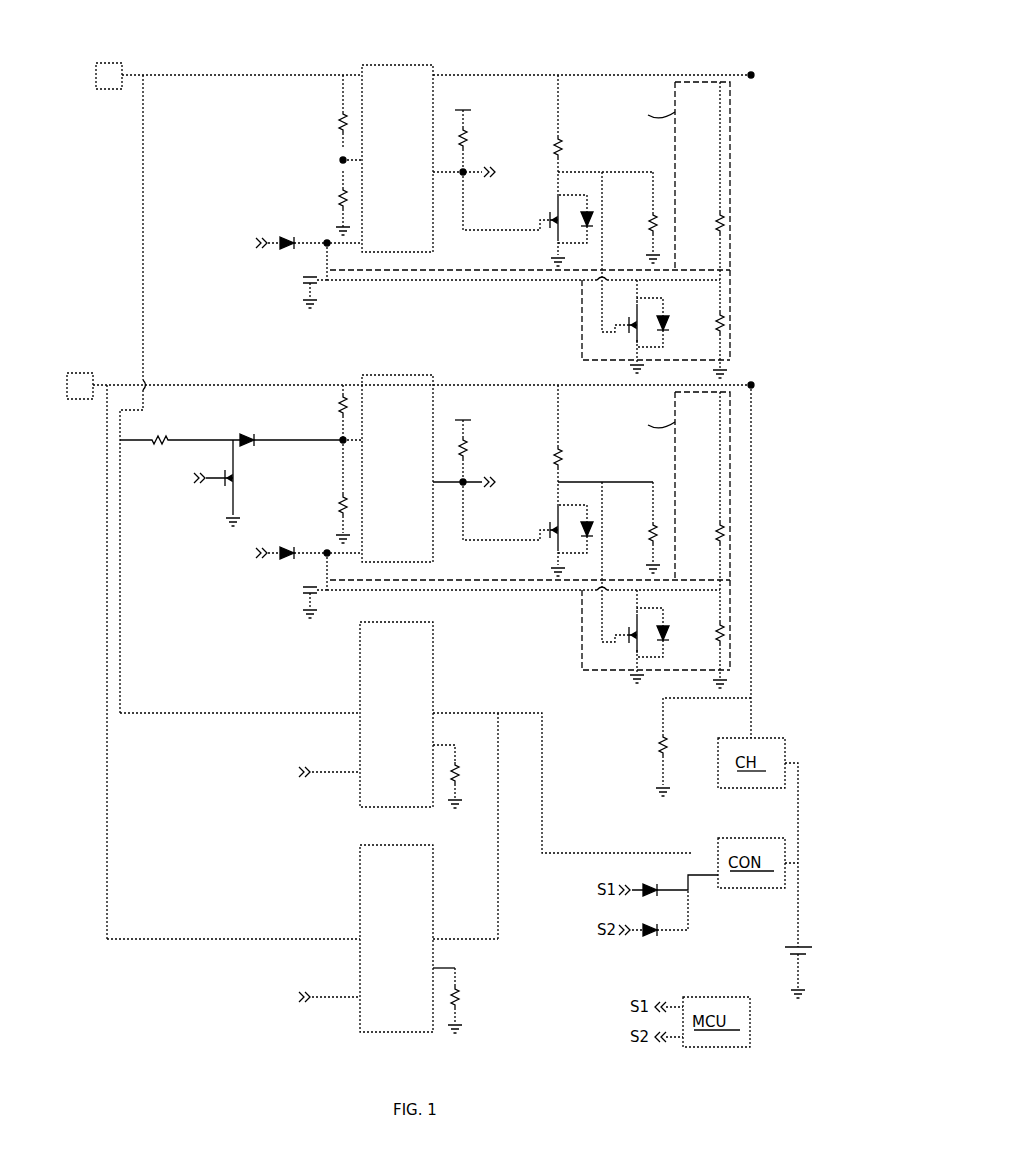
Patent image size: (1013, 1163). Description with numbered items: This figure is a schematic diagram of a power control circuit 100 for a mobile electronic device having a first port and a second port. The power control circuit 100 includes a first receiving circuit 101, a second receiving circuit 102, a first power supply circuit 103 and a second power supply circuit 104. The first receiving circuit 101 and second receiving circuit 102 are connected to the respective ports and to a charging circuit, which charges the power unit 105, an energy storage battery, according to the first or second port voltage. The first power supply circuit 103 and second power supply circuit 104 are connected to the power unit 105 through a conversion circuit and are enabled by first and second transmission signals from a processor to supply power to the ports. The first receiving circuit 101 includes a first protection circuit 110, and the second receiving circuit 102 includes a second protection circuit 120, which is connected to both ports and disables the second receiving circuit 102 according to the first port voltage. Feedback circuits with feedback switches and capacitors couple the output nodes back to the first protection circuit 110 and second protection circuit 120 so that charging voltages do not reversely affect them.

The power control circuit 100 is at (800, 43).
The first receiving circuit 101 is at (783, 75).
The second receiving circuit 102 is at (783, 385).
The first power supply circuit 103 is at (408, 723).
The second power supply circuit 104 is at (408, 948).
The power unit 105 is at (795, 945).
The first protection circuit 110 is at (410, 168).
The second protection circuit 120 is at (410, 478).